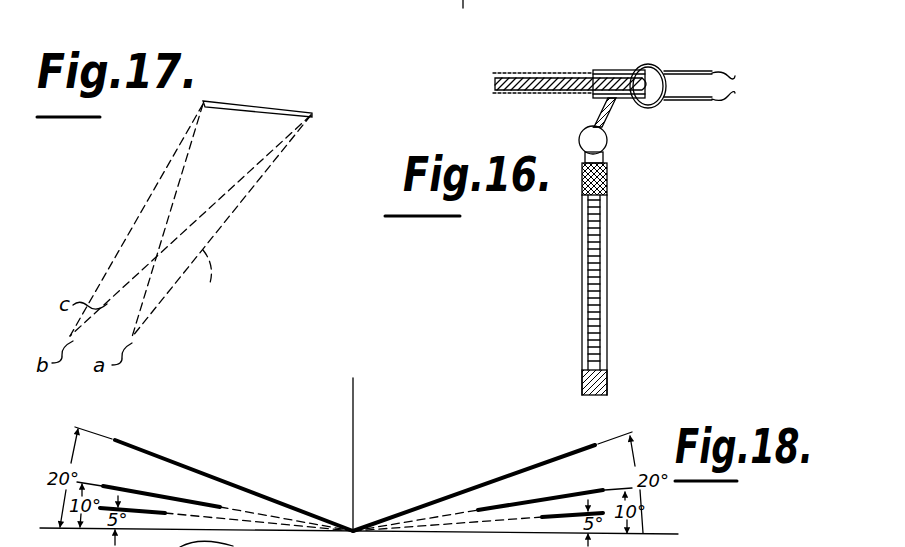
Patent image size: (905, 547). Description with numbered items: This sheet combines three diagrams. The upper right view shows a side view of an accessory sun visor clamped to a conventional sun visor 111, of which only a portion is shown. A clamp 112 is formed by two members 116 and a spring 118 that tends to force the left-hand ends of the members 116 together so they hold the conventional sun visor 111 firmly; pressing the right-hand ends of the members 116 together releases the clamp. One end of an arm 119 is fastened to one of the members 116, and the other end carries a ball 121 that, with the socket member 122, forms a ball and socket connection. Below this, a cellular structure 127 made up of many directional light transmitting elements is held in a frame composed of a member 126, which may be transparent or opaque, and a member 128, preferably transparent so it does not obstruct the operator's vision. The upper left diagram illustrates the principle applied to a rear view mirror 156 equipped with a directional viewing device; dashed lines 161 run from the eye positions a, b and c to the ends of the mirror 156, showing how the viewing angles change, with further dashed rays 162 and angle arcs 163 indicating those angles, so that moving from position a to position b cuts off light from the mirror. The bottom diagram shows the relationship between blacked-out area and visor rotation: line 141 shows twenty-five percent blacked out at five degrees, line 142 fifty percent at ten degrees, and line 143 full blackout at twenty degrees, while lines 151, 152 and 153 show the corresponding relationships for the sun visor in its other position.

In FIG. 16, the conventional sun visor 111 is at (493, 97).
In FIG. 16, the clamp 112 is at (610, 69).
In FIG. 16, the clamp members 116 is at (720, 83).
In FIG. 16, the spring 118 is at (660, 106).
In FIG. 16, the arm 119 is at (603, 108).
In FIG. 16, the ball 121 is at (588, 127).
In FIG. 16, the socket member 122 is at (607, 143).
In FIG. 16, the frame member 126 is at (608, 175).
In FIG. 16, the cellular structure 127 is at (607, 268).
In FIG. 16, the frame member 128 is at (604, 378).
In FIG. 17, the rear view mirror 156 is at (277, 92).
In FIG. 17, the angle lines 161 is at (143, 297).
In FIG. 17, the ray 162 is at (118, 265).
In FIG. 17, the ray 163 is at (157, 197).
In FIG. 18, the line 141 is at (155, 515).
In FIG. 18, the line 142 is at (139, 486).
In FIG. 18, the line 143 is at (210, 457).
In FIG. 18, the line 151 is at (548, 518).
In FIG. 18, the line 152 is at (567, 492).
In FIG. 18, the line 153 is at (505, 474).